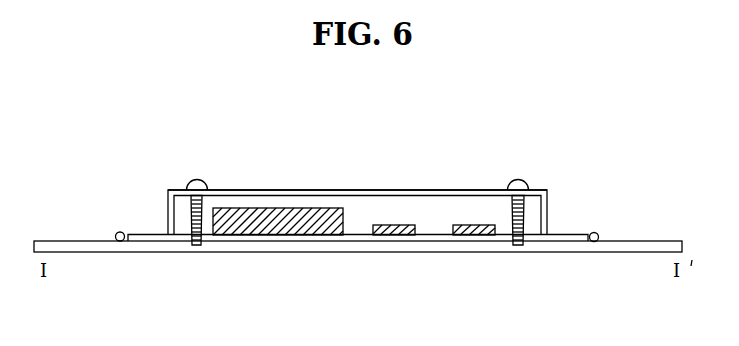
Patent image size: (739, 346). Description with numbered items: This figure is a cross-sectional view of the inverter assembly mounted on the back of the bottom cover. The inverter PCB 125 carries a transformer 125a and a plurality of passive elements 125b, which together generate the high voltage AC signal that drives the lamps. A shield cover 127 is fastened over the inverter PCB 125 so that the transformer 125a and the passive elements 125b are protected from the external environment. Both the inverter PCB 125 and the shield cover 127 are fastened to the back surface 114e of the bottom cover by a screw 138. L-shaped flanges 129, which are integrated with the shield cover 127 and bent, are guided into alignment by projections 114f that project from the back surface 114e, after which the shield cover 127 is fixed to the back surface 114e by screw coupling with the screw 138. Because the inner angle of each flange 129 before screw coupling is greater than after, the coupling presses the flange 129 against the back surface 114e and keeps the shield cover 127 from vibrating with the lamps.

The back surface 114e is at (76, 242).
The projections 114f is at (598, 232).
The inverter PCB 125 is at (357, 237).
The transformer 125a is at (282, 226).
The passive elements 125b is at (460, 236).
The shield cover 127 is at (353, 189).
The L-shaped flanges 129 is at (566, 199).
The screw 138 is at (517, 183).